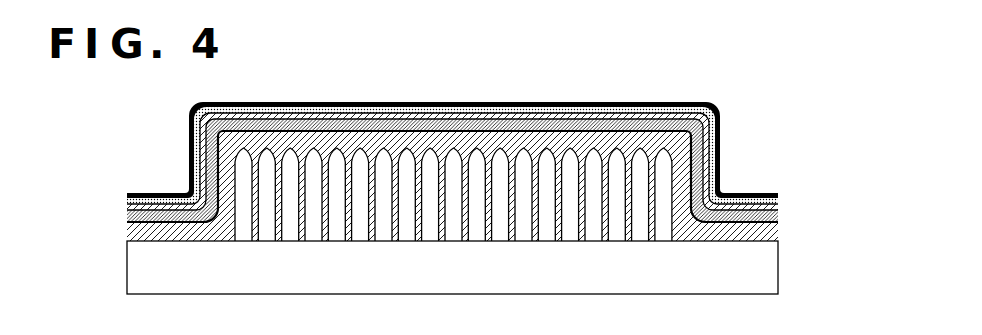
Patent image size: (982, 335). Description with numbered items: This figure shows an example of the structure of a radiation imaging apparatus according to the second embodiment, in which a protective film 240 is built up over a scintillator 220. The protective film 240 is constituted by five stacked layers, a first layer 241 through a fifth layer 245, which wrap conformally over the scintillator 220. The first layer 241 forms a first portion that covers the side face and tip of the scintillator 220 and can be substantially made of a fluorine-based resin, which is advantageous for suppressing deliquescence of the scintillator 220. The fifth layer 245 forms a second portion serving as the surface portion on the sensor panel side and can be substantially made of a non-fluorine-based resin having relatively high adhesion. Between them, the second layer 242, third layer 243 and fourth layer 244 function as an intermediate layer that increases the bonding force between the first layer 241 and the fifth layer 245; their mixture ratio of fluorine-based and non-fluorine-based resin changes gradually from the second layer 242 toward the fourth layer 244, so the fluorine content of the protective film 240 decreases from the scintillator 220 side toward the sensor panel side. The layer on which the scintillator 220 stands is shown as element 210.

The substrate 210 is at (773, 271).
The scintillator 220 is at (617, 236).
The protective film 240 is at (421, 139).
The first layer 241 is at (312, 137).
The second layer 242 is at (390, 131).
The third layer 243 is at (459, 122).
The fourth layer 244 is at (529, 115).
The fifth layer 245 is at (600, 105).